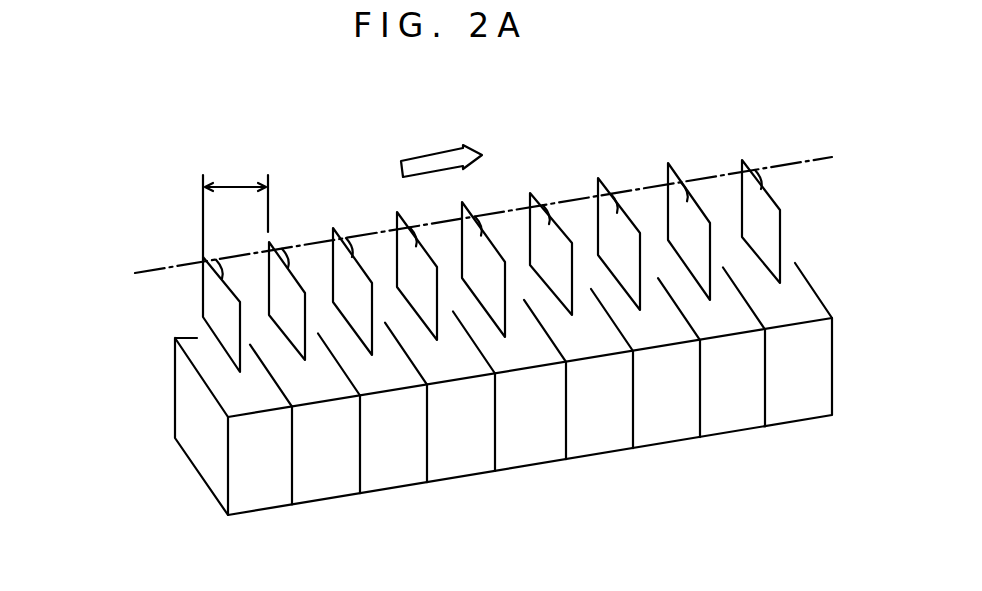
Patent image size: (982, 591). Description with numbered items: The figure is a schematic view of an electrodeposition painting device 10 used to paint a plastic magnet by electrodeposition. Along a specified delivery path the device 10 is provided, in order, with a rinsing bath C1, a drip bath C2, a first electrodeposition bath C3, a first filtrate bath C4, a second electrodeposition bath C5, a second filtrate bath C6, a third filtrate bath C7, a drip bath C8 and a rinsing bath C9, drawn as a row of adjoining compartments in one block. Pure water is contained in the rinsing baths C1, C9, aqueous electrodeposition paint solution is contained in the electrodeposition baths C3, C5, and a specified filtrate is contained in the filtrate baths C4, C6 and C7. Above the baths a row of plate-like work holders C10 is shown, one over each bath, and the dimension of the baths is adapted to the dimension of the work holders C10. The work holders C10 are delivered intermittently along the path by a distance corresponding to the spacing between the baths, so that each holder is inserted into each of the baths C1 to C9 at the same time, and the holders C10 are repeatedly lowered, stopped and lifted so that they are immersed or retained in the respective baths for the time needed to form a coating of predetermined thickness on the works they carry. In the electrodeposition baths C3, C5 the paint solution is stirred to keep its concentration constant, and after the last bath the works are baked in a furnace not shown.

The electrodeposition painting device 10 is at (345, 163).
The work holder C10 is at (208, 292).
The rinsing bath C1 is at (265, 495).
The drip bath C2 is at (332, 480).
The first electrodeposition bath C3 is at (395, 475).
The first filtrate bath C4 is at (468, 462).
The second electrodeposition bath C5 is at (540, 455).
The second filtrate bath C6 is at (605, 445).
The third filtrate bath C7 is at (677, 425).
The drip bath C8 is at (742, 413).
The rinsing bath C9 is at (810, 400).